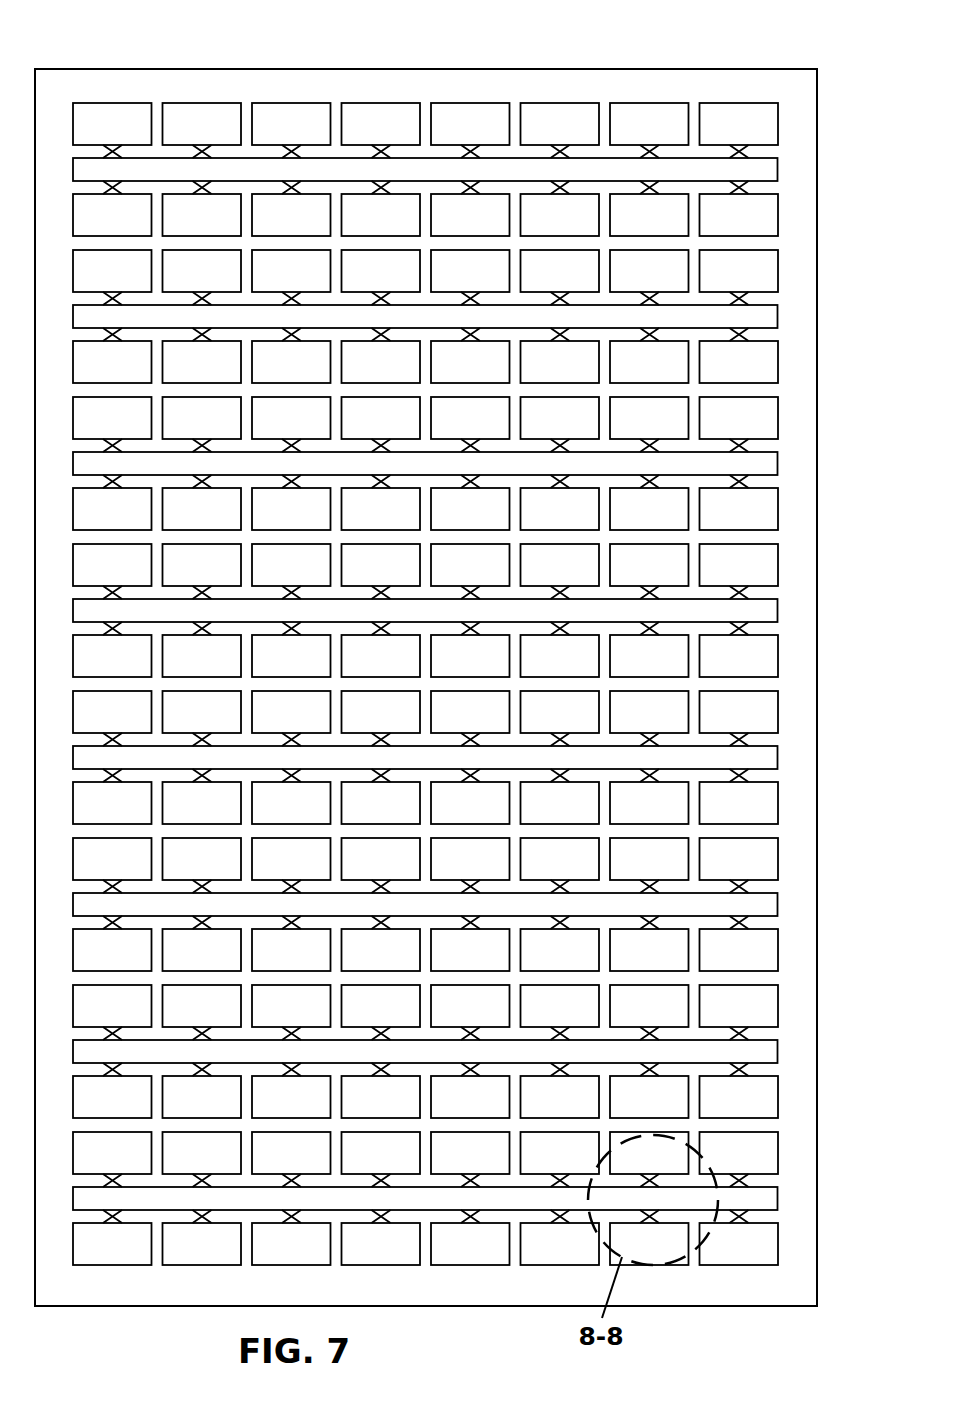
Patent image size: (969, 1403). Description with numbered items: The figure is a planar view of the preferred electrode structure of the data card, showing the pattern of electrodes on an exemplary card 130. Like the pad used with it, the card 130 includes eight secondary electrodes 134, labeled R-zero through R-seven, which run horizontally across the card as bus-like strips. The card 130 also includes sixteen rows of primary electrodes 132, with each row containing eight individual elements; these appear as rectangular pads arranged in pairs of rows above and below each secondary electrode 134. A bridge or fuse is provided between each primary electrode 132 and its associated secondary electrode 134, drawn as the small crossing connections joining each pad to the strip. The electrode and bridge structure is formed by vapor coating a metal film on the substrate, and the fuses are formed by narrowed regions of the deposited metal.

The card 130 is at (190, 68).
The primary electrodes 132 is at (570, 90).
The secondary electrodes 134 is at (788, 187).